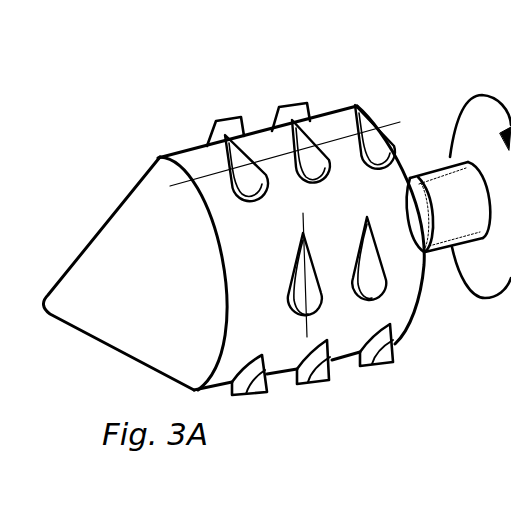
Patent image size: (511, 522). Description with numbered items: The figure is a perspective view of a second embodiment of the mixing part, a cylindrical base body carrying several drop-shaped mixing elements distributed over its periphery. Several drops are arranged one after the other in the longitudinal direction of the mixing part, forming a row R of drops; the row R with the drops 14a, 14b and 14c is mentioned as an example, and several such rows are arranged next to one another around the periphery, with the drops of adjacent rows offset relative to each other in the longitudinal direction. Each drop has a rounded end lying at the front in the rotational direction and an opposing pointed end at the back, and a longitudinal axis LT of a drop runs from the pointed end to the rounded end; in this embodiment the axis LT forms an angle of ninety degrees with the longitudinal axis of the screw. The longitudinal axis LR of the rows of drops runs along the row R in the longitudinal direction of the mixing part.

The drop 14a is at (253, 397).
The drop 14b is at (322, 384).
The drop 14c is at (383, 366).
The longitudinal axis of the rows of drops LR is at (400, 123).
The longitudinal axis of a drop LT is at (302, 223).
The row of drops R is at (260, 437).